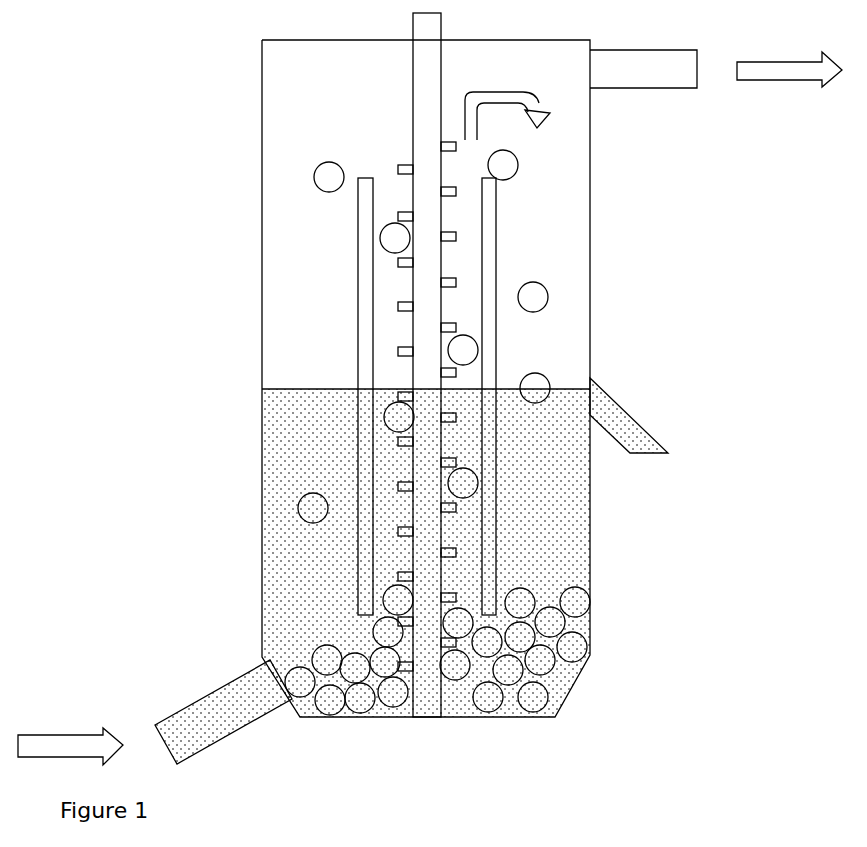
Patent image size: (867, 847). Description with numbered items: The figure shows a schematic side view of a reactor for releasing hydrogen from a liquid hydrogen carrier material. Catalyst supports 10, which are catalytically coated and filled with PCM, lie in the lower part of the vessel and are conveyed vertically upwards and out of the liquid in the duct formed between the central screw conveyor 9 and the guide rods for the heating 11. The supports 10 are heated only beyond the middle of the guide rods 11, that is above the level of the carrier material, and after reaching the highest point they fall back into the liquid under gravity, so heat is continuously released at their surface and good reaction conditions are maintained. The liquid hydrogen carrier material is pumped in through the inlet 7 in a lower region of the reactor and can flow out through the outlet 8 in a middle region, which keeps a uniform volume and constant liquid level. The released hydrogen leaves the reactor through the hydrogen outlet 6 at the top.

The hydrogen outlet 6 is at (645, 88).
The liquid hydrogen carrier material inlet 7 is at (152, 728).
The liquid hydrogen carrier material outlet 8 is at (630, 415).
The screw conveyor 9 is at (410, 365).
The catalyst supports 10 is at (315, 165).
The guide rods for the heating 11 is at (367, 392).